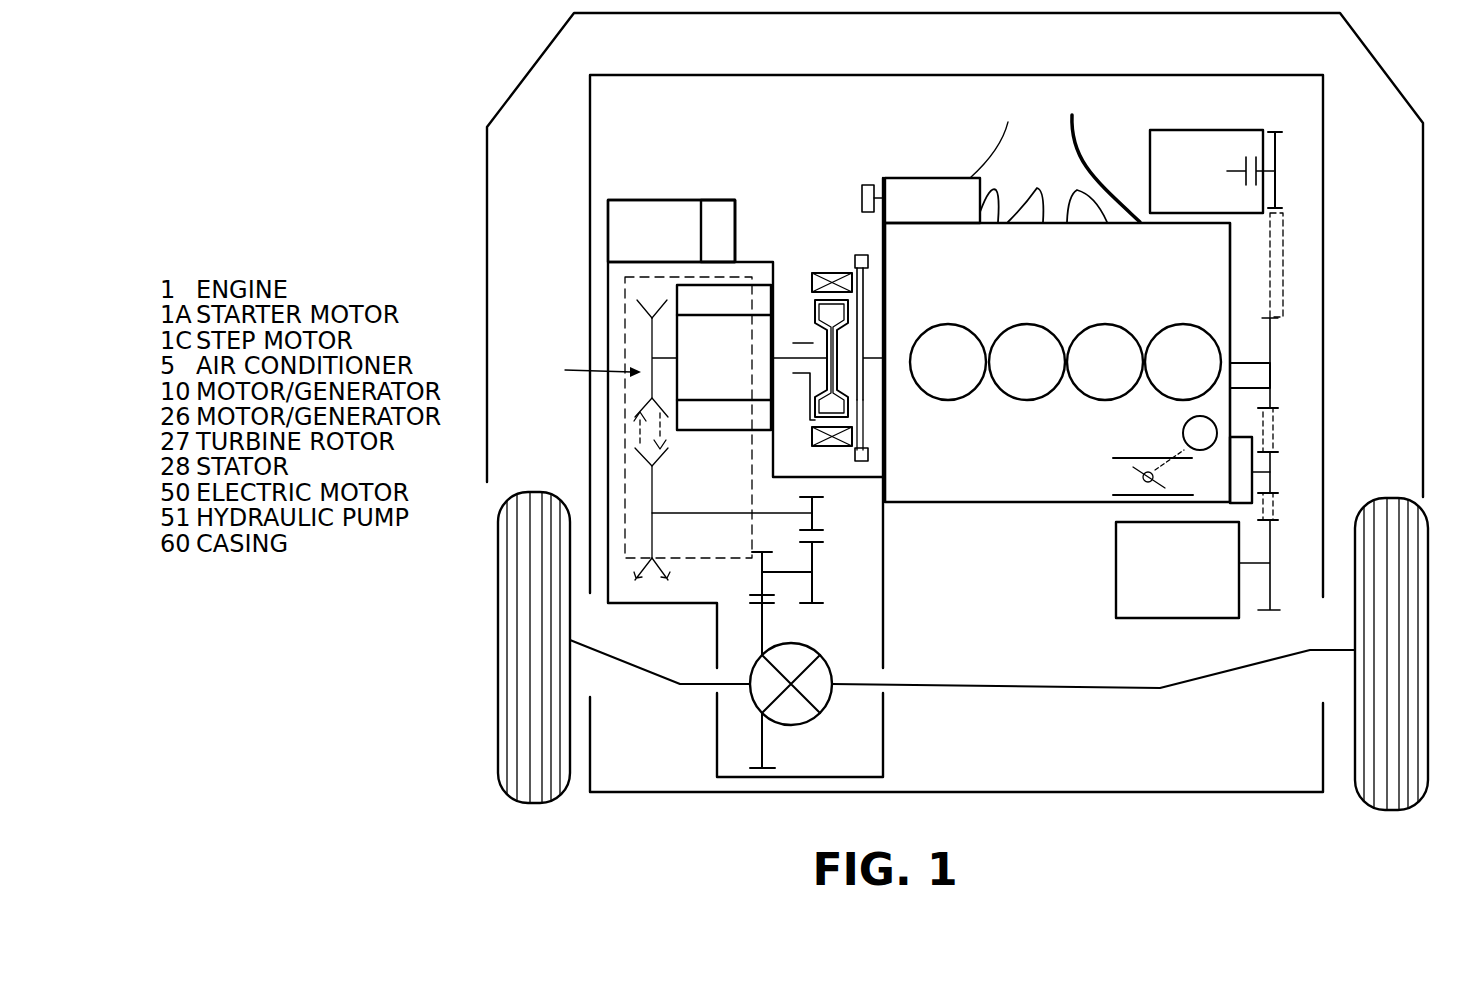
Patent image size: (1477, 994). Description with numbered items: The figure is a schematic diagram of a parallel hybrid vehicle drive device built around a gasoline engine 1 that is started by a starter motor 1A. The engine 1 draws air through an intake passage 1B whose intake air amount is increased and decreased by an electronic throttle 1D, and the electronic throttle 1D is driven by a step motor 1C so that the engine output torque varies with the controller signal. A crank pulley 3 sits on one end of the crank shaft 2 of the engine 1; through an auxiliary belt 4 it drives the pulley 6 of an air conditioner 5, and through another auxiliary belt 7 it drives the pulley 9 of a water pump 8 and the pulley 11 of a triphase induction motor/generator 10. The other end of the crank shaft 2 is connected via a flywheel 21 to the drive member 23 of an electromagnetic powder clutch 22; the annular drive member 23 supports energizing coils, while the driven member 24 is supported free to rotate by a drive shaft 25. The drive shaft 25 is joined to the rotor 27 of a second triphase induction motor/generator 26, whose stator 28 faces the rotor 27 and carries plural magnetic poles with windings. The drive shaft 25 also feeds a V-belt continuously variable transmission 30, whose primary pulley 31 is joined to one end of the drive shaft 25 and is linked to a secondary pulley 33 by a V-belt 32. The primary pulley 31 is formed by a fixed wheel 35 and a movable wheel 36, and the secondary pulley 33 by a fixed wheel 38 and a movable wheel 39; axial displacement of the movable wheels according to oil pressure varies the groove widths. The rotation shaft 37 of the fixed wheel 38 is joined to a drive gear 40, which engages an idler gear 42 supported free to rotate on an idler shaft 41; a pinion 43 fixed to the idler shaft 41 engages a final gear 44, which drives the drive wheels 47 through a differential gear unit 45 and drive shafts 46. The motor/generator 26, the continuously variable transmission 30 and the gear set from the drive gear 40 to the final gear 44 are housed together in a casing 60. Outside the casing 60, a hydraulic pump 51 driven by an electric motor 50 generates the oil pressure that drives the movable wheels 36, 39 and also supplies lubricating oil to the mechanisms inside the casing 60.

The gasoline engine 1 is at (977, 480).
The starter motor 1A is at (940, 178).
The intake passage 1B is at (1118, 460).
The step motor 1C is at (1203, 450).
The electronic throttle 1D is at (1130, 470).
The crank shaft 2 is at (866, 358).
The crank pulley 3 is at (1272, 390).
The auxiliary belt 4 is at (1284, 258).
The air conditioner 5 is at (1213, 150).
The pulley 6 is at (1279, 150).
The auxiliary belt 7 is at (1274, 508).
The water pump 8 is at (1276, 445).
The pulley 9 is at (1276, 485).
The triphase induction motor/generator 10 is at (1168, 608).
The pulley 11 is at (1271, 590).
The flywheel 21 is at (866, 423).
The electromagnetic powder clutch 22 is at (804, 321).
The drive member 23 is at (838, 272).
The driven member 24 is at (826, 318).
The drive shaft 25 is at (782, 362).
The triphase induction motor/generator 26 is at (748, 470).
The rotor 27 is at (688, 388).
The stator 28 is at (725, 415).
The continuously variable transmission 30 is at (580, 368).
The primary pulley 31 is at (650, 333).
The V-belt 32 is at (640, 432).
The secondary pulley 33 is at (648, 498).
The fixed wheel 35 is at (660, 305).
The movable wheel 36 is at (640, 305).
The rotation shaft 37 is at (718, 515).
The fixed wheel 38 is at (665, 582).
The movable wheel 39 is at (636, 582).
The drive gear 40 is at (816, 506).
The idler shaft 41 is at (777, 574).
The idler gear 42 is at (814, 560).
The pinion 43 is at (758, 580).
The final gear 44 is at (763, 738).
The differential gear unit 45 is at (820, 710).
The drive shafts 46 is at (656, 684).
The drive wheels 47 is at (497, 640).
The electric motor 50 is at (713, 209).
The hydraulic pump 51 is at (632, 200).
The casing 60 is at (884, 595).